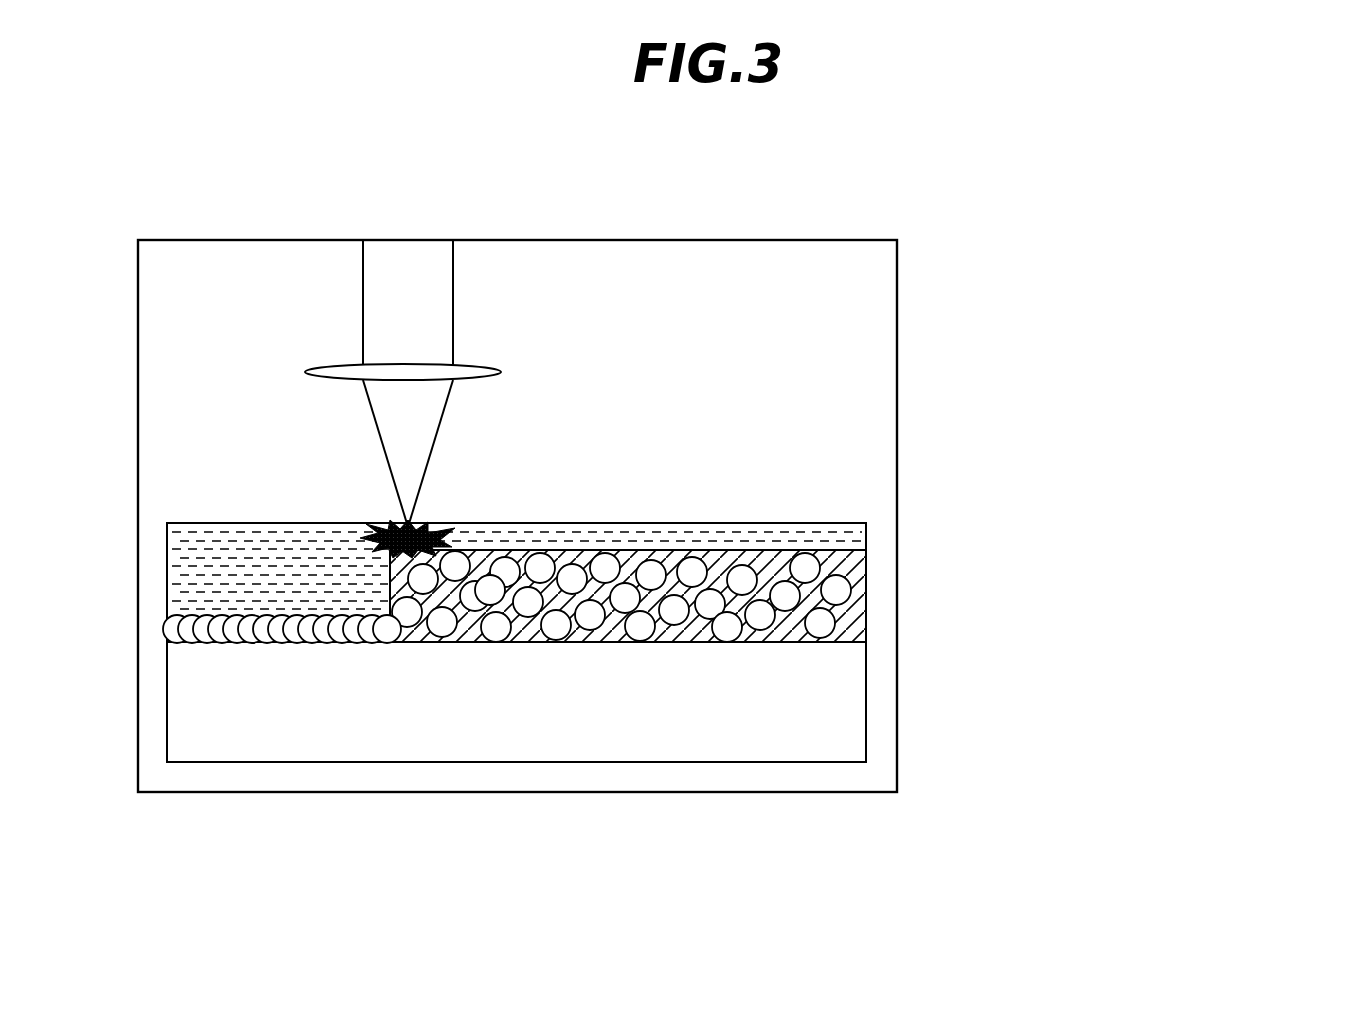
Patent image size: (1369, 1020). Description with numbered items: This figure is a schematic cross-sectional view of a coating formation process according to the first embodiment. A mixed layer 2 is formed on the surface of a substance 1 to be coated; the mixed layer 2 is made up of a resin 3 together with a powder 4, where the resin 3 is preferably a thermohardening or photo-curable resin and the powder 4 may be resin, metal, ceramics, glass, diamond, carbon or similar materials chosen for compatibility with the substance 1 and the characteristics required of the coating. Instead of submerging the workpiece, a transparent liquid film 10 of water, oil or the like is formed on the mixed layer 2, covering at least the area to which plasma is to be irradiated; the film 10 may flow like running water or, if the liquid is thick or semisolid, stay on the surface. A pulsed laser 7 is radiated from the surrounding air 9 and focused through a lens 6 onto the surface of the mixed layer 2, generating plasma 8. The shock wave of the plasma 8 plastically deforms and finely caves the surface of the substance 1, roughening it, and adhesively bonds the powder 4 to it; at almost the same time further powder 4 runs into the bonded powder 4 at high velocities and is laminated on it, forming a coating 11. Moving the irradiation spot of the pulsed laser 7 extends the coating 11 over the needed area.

The substance to be coated 1 is at (860, 707).
The mixed layer 2 is at (866, 627).
The resin 3 is at (860, 587).
The powder 4 is at (810, 565).
The lens 6 is at (500, 372).
The pulsed laser 7 is at (437, 455).
The plasma 8 is at (445, 534).
The air 9 is at (885, 250).
The transparent liquid film 10 is at (810, 527).
The coating 11 is at (162, 630).